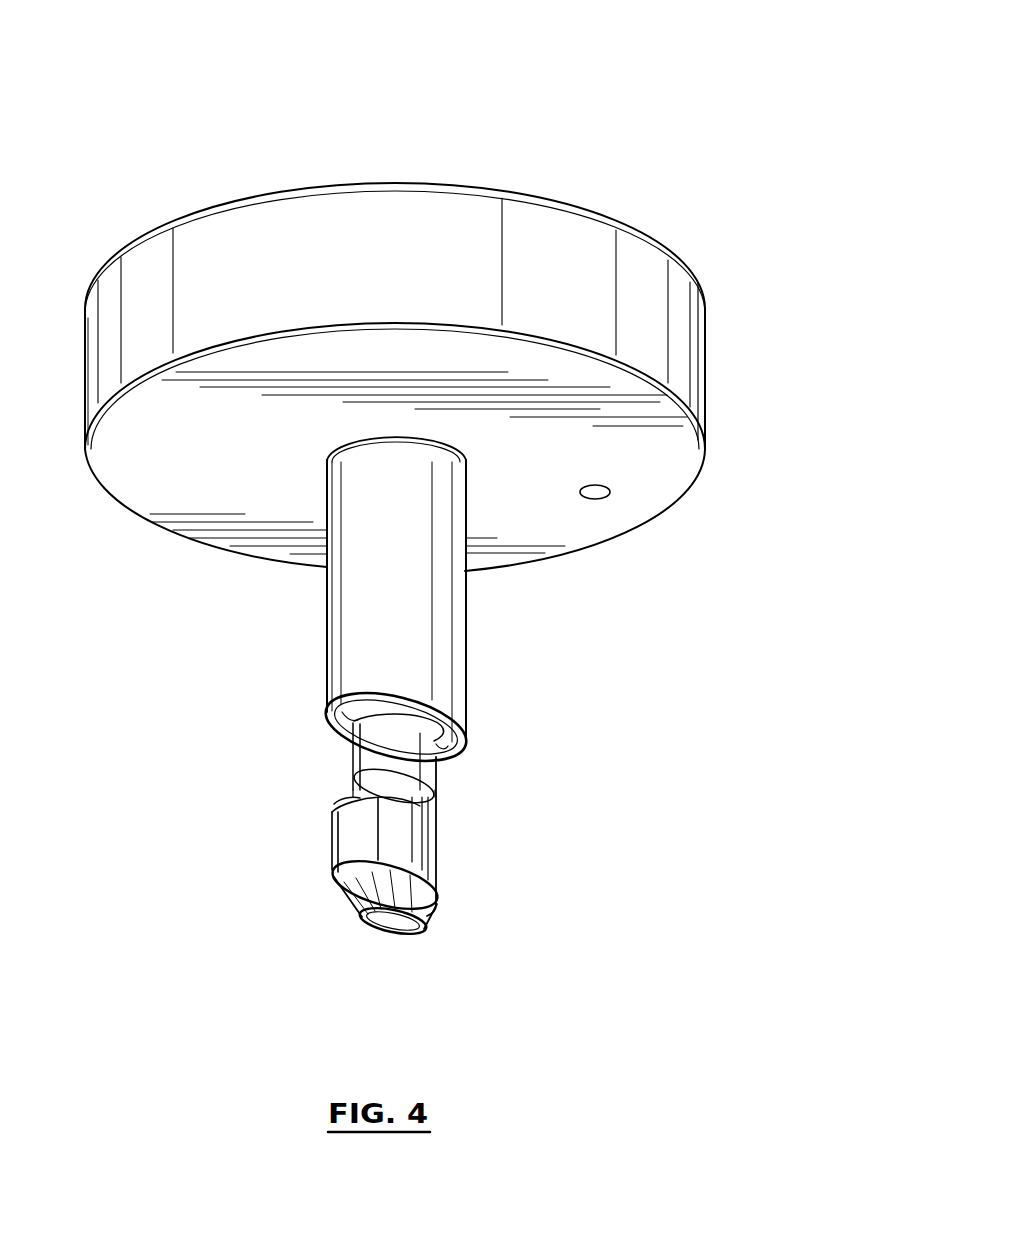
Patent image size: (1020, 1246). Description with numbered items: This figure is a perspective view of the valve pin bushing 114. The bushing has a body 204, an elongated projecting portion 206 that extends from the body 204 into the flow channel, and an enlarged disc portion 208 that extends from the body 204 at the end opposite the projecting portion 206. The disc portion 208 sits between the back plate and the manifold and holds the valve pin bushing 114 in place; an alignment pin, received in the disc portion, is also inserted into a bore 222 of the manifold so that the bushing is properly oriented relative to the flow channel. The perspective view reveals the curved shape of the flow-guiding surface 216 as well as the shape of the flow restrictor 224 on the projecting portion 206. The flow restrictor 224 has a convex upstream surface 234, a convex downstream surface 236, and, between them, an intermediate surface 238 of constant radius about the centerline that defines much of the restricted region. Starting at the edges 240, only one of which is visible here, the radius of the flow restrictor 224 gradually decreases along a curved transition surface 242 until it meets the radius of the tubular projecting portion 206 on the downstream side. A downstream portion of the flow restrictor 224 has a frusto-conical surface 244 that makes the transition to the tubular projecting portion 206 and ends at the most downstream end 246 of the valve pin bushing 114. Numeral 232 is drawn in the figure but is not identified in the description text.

The valve pin bushing 114 is at (704, 129).
The disc portion 208 is at (676, 348).
The bore 222 is at (598, 499).
The body 204 is at (448, 605).
The projecting portion 206 is at (449, 876).
The flow-guiding surface 216 is at (432, 723).
The flow restrictor 224 is at (318, 823).
The neck 232 is at (353, 753).
The upstream surface 234 is at (343, 800).
The intermediate surface 238 is at (347, 847).
The edges 240 is at (380, 808).
The transition surface 242 is at (422, 846).
The downstream surface 236 is at (332, 876).
The frusto-conical surface 244 is at (350, 907).
The most downstream end 246 is at (399, 933).